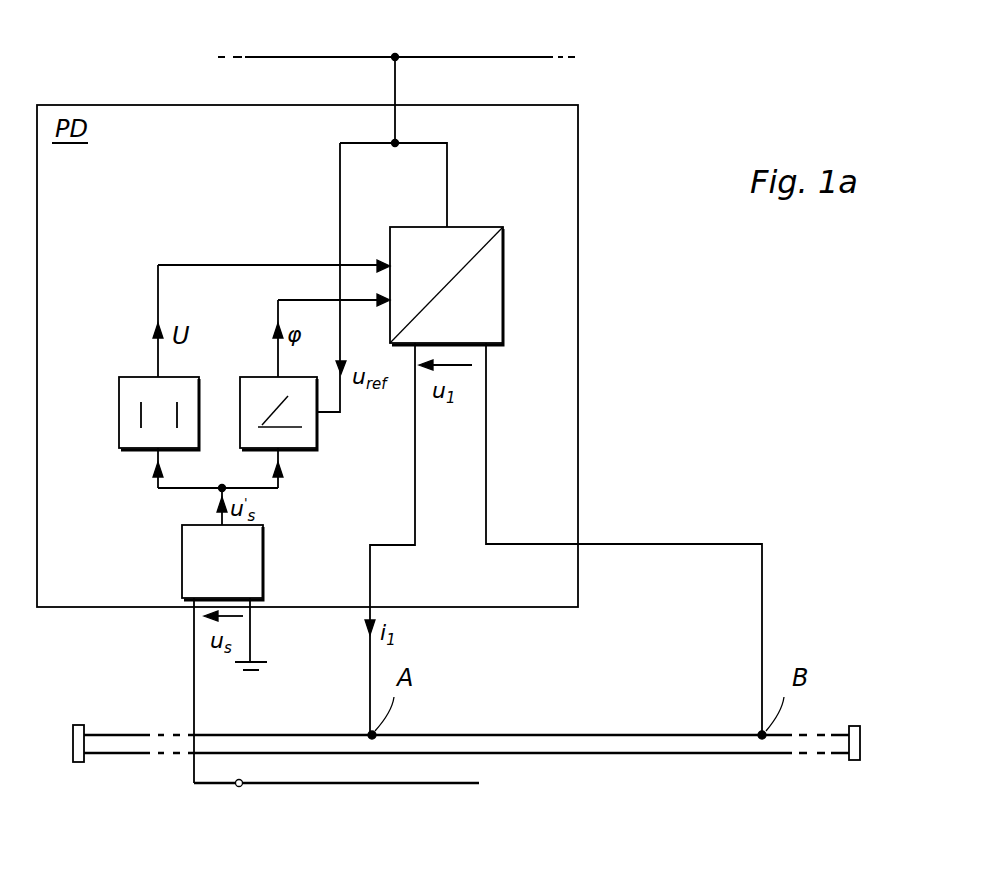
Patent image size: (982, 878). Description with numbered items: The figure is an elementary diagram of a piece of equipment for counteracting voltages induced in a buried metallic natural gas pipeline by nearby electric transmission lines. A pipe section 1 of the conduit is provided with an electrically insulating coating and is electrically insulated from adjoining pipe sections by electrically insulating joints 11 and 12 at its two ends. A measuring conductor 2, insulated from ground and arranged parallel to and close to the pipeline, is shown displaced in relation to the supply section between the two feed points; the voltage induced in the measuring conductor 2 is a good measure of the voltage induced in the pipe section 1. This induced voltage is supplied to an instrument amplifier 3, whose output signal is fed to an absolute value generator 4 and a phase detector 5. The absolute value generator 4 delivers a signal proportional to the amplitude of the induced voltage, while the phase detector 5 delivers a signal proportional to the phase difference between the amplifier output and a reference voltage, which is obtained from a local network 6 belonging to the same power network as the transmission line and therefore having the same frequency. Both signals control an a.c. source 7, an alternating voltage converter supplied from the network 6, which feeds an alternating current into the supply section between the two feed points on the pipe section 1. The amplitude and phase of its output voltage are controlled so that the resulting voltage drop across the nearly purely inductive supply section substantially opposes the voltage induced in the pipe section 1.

The pipe section 1 is at (518, 742).
The measuring conductor 2 is at (381, 790).
The instrument amplifier 3 is at (265, 560).
The absolute value generator 4 is at (121, 452).
The phase detector 5 is at (308, 452).
The local network 6 is at (436, 56).
The a.c. source 7 is at (493, 226).
The electrically insulating joint 11 is at (80, 722).
The electrically insulating joint 12 is at (854, 723).